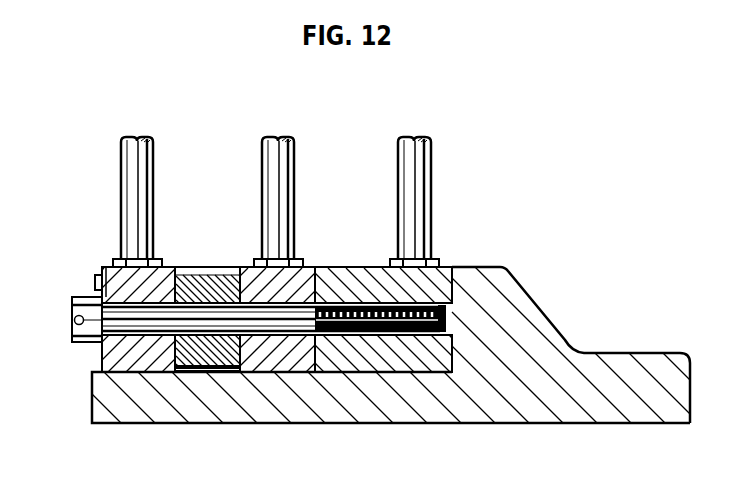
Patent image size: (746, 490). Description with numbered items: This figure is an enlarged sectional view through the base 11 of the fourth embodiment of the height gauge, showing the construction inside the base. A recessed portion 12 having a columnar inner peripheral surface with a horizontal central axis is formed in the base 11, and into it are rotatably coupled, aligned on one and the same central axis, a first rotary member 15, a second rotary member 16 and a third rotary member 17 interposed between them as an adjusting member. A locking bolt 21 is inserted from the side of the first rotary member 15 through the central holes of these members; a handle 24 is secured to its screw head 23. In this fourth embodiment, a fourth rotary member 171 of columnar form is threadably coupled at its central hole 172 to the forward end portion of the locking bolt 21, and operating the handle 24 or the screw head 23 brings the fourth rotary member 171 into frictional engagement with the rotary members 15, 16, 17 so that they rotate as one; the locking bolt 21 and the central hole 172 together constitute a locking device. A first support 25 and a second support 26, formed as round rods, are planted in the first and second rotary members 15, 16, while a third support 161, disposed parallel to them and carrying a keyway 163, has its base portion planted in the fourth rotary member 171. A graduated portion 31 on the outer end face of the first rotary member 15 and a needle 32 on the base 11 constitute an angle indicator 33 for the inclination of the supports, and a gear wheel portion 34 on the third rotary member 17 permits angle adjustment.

The base 11 is at (535, 312).
The recessed portion 12 is at (373, 366).
The first rotary member 15 is at (106, 358).
The second rotary member 16 is at (295, 362).
The third rotary member 17 is at (211, 272).
The locking bolt 21 is at (183, 276).
The screw head 23 is at (80, 306).
The handle 24 is at (76, 323).
The first support 25 is at (133, 157).
The second support 26 is at (272, 158).
The graduated portion 31 is at (102, 268).
The needle 32 is at (82, 266).
The angle indicator 33 is at (70, 254).
The gear wheel portion 34 is at (177, 372).
The third support 161 is at (429, 190).
The keyway 163 is at (410, 160).
The fourth rotary member 171 is at (370, 272).
The central hole 172 is at (333, 312).